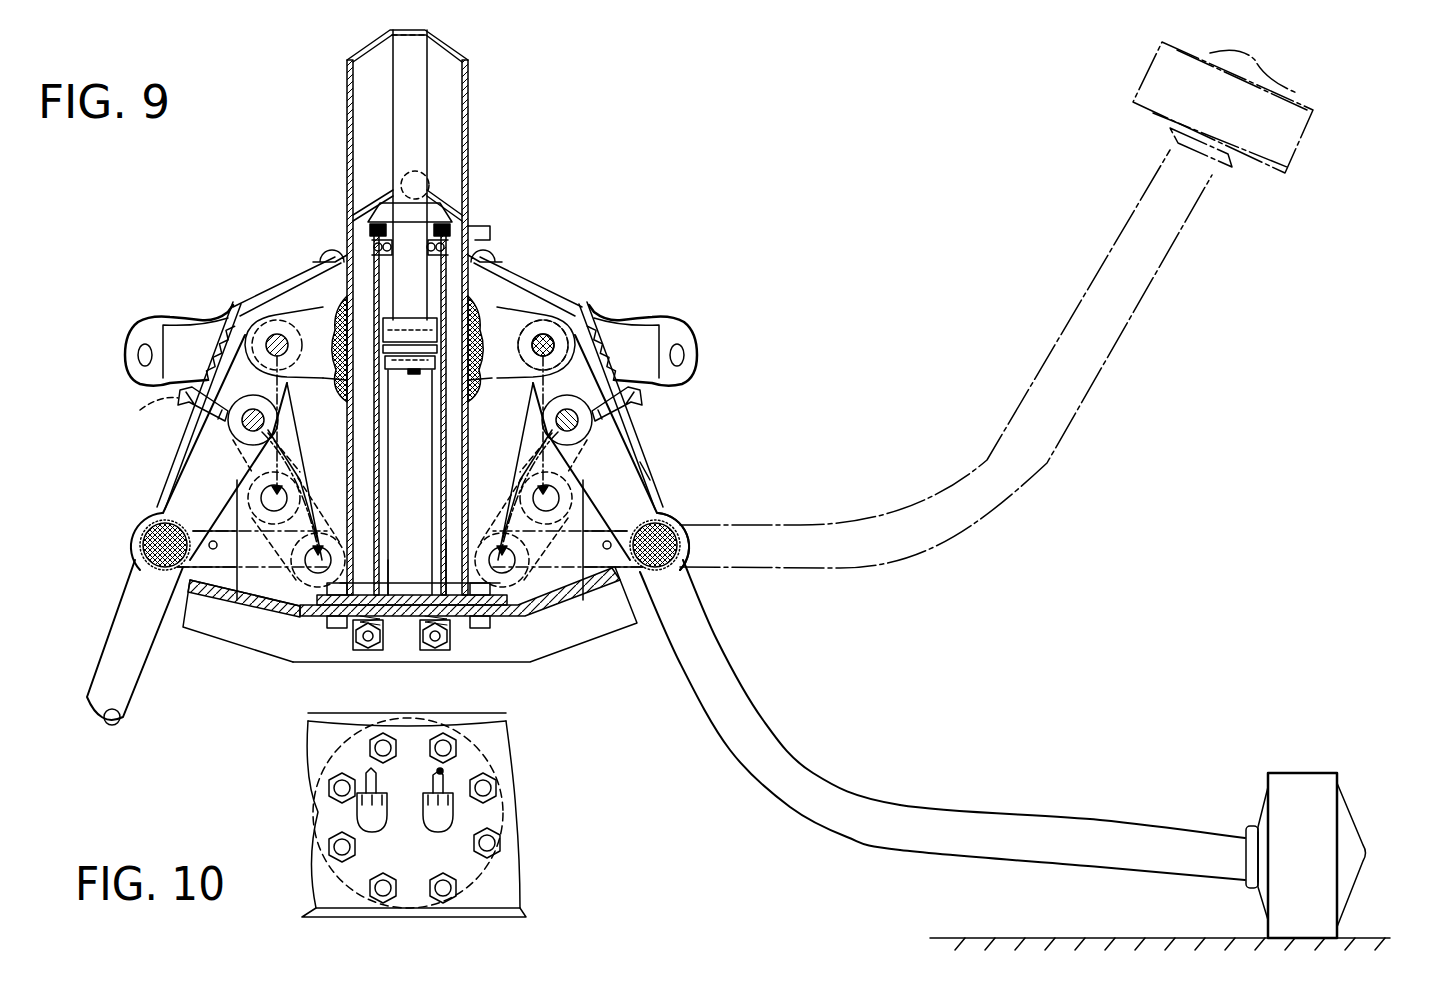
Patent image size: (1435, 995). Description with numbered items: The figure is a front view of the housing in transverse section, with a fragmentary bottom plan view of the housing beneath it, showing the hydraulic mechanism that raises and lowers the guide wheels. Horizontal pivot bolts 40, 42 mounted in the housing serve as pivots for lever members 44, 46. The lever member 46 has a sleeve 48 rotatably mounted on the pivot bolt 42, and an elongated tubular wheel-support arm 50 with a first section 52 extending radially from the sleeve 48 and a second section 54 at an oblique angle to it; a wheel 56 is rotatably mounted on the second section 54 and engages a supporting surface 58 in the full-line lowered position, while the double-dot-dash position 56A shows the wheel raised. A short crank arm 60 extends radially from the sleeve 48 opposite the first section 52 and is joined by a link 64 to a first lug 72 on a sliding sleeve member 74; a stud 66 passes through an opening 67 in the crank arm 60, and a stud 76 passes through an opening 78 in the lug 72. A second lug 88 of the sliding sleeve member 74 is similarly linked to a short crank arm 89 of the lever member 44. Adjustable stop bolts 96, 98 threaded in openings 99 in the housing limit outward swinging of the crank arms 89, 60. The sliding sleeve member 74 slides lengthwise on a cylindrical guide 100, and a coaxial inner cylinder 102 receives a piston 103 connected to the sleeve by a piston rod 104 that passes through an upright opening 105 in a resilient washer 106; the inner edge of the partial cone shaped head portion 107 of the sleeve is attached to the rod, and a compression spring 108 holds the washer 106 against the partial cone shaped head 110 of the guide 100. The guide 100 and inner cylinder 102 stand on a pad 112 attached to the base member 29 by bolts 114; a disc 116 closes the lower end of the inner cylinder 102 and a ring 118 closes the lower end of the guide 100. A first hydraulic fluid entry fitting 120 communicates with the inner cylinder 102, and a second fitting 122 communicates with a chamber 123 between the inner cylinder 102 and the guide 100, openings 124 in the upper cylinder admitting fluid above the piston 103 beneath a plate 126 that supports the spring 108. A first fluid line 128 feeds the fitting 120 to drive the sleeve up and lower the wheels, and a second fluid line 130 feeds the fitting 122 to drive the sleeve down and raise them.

In FIG. 9, the base member 29 is at (576, 625).
In FIG. 10, the base member 29 is at (500, 888).
In FIG. 9, the horizontal pivot bolt 40 is at (148, 544).
In FIG. 9, the horizontal pivot bolt 42 is at (681, 523).
In FIG. 9, the lever member 44 is at (104, 624).
In FIG. 9, the lever member 46 is at (642, 470).
In FIG. 9, the sleeve 48 is at (662, 512).
In FIG. 9, the tubular wheel-support arm 50 is at (888, 855).
In FIG. 9, the first section 52 is at (703, 640).
In FIG. 9, the second section 54 is at (977, 823).
In FIG. 9, the wheel 56 is at (1297, 790).
In FIG. 9, the raised wheel position 56A is at (1285, 175).
In FIG. 9, the supporting surface 58 is at (1100, 935).
In FIG. 9, the short crank arm 60 is at (612, 445).
In FIG. 9, the link 64 is at (532, 387).
In FIG. 9, the stud 66 is at (562, 406).
In FIG. 9, the opening 67 is at (568, 432).
In FIG. 9, the first lug 72 is at (546, 332).
In FIG. 9, the sliding sleeve member 74 is at (452, 223).
In FIG. 9, the stud 76 is at (585, 322).
In FIG. 9, the opening 78 is at (558, 326).
In FIG. 9, the second lug 88 is at (305, 308).
In FIG. 9, the short crank arm 89 is at (200, 478).
In FIG. 9, the adjustable stop bolt 96 is at (178, 399).
In FIG. 9, the adjustable stop bolt 98 is at (641, 398).
In FIG. 9, the openings 99 is at (205, 424).
In FIG. 9, the cylindrical guide 100 is at (370, 434).
In FIG. 9, the inner cylinder 102 is at (447, 478).
In FIG. 9, the piston 103 is at (431, 377).
In FIG. 9, the piston rod 104 is at (393, 135).
In FIG. 9, the upright opening 105 is at (430, 180).
In FIG. 9, the resilient washer 106 is at (383, 198).
In FIG. 9, the partial cone shaped head portion 107 is at (440, 47).
In FIG. 9, the compression spring 108 is at (375, 228).
In FIG. 9, the partial cone shaped head 110 is at (435, 198).
In FIG. 9, the pad 112 is at (318, 614).
In FIG. 10, the pad 112 is at (505, 800).
In FIG. 9, the bolts 114 is at (337, 632).
In FIG. 10, the bolts 114 is at (447, 748).
In FIG. 9, the disc 116 is at (393, 595).
In FIG. 9, the ring 118 is at (455, 542).
In FIG. 9, the first hydraulic fluid entry fitting 120 is at (412, 630).
In FIG. 9, the second hydraulic fluid entry fitting 122 is at (388, 630).
In FIG. 9, the chamber 123 is at (364, 410).
In FIG. 9, the openings 124 is at (445, 248).
In FIG. 9, the plate 126 is at (480, 230).
In FIG. 9, the first fluid line 128 is at (445, 648).
In FIG. 10, the first fluid line 128 is at (443, 773).
In FIG. 9, the second fluid line 130 is at (369, 640).
In FIG. 10, the second fluid line 130 is at (368, 772).